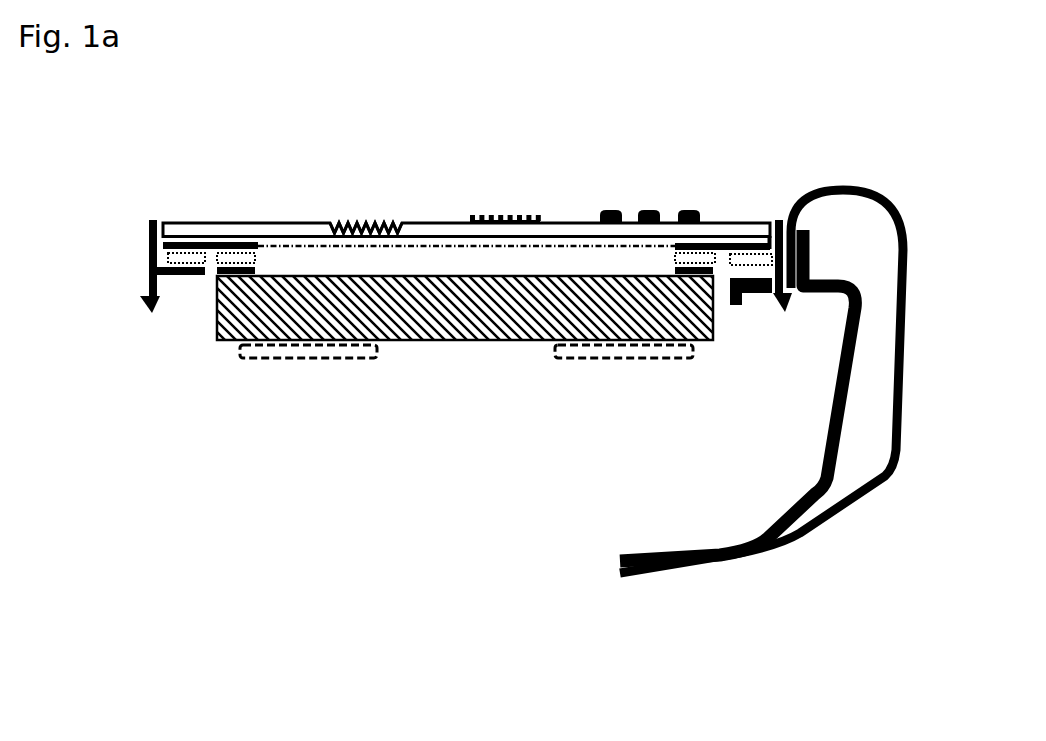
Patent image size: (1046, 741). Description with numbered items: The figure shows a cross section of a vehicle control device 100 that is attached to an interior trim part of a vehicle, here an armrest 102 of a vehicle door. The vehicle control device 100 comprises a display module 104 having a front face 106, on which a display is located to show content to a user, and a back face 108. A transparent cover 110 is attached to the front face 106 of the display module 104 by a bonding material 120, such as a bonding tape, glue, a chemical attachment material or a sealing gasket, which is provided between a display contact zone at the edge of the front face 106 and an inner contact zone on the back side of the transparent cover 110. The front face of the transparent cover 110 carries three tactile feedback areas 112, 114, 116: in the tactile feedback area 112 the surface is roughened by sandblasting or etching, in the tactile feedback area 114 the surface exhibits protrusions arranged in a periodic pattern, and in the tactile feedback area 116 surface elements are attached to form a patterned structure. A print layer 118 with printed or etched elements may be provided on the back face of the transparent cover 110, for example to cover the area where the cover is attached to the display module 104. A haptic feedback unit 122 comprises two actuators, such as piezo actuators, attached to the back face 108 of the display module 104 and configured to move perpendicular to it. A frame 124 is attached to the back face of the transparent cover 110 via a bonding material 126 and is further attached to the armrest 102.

The vehicle control device 100 is at (468, 505).
The armrest 102 is at (722, 548).
The display module 104 is at (515, 365).
The front face 106 is at (473, 276).
The back face 108 is at (427, 340).
The transparent cover 110 is at (287, 230).
The tactile feedback area 112 is at (365, 220).
The tactile feedback area 114 is at (500, 212).
The tactile feedback area 116 is at (645, 207).
The print layer 118 is at (203, 243).
The bonding material 120 is at (218, 262).
The haptic feedback unit 122 is at (308, 358).
The frame 124 is at (152, 312).
The bonding material 126 is at (168, 258).